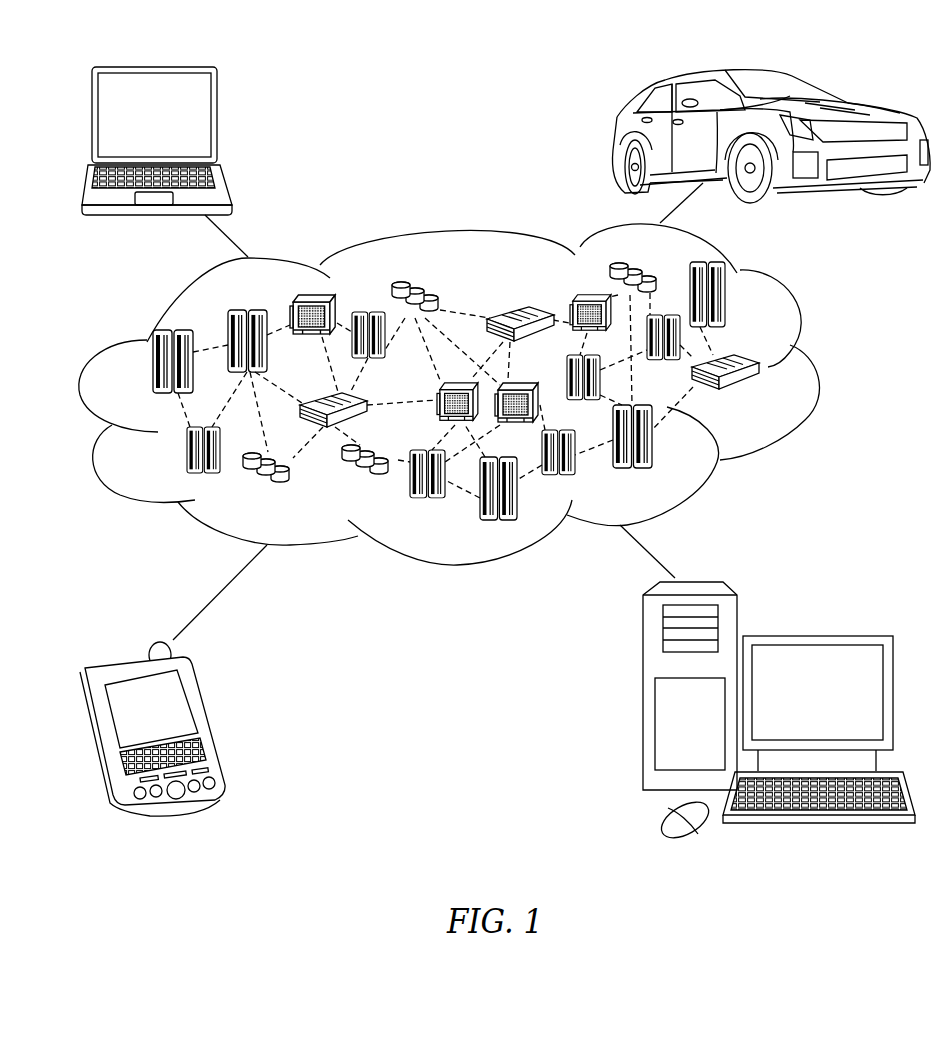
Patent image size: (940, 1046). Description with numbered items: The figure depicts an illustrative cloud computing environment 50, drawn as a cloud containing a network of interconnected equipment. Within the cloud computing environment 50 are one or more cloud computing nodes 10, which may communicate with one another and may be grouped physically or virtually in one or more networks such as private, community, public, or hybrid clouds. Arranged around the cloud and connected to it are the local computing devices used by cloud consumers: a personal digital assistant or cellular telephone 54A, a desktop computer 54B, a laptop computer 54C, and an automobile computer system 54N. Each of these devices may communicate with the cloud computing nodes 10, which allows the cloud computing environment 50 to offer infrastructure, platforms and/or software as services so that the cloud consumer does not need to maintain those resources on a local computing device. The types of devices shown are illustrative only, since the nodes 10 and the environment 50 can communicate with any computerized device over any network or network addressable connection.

The cloud computing nodes 10 is at (768, 401).
The cloud computing environment 50 is at (817, 373).
The personal digital assistant (PDA) or cellular telephone 54A is at (213, 717).
The desktop computer 54B is at (815, 633).
The laptop computer 54C is at (218, 121).
The automobile computer system 54N is at (617, 137).